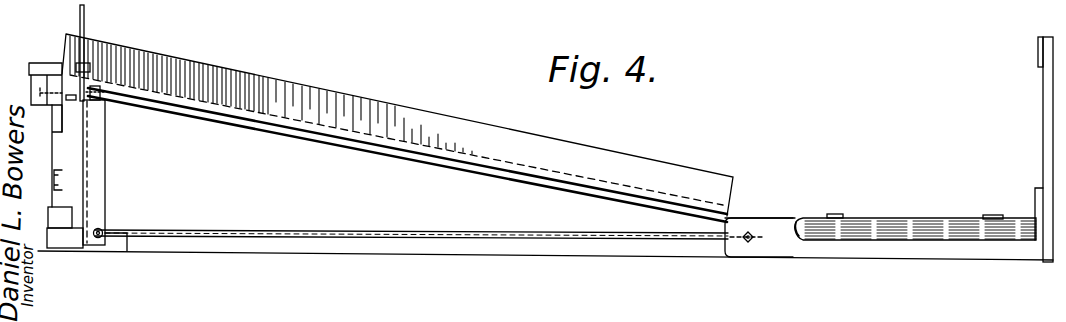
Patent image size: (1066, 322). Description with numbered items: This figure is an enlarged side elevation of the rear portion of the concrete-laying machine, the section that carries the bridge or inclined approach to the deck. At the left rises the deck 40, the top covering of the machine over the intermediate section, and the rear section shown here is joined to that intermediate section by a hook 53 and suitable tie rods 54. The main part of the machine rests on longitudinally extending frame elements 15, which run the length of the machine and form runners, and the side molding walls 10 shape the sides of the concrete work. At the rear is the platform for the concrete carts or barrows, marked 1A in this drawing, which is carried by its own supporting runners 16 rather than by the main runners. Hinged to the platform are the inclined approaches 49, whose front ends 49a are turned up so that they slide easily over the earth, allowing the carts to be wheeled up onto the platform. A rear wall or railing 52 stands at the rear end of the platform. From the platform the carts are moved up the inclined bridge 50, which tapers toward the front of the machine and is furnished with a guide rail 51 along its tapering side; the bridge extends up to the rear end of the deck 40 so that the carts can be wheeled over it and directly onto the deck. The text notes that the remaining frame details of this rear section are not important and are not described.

The deck 40 is at (42, 65).
The hook 53 is at (97, 101).
The inclined bridge 50 is at (258, 95).
The guide rail 51 is at (398, 148).
The base plate 1A is at (800, 192).
The inclined approaches 49 is at (883, 224).
The turned-up front ends 49a is at (795, 241).
The rear wall or railing 52 is at (1047, 115).
The tie rods 54 is at (300, 220).
The side molding walls 10 is at (60, 218).
The longitudinally extending frame elements 15 is at (67, 238).
The supporting runners 16 is at (734, 252).